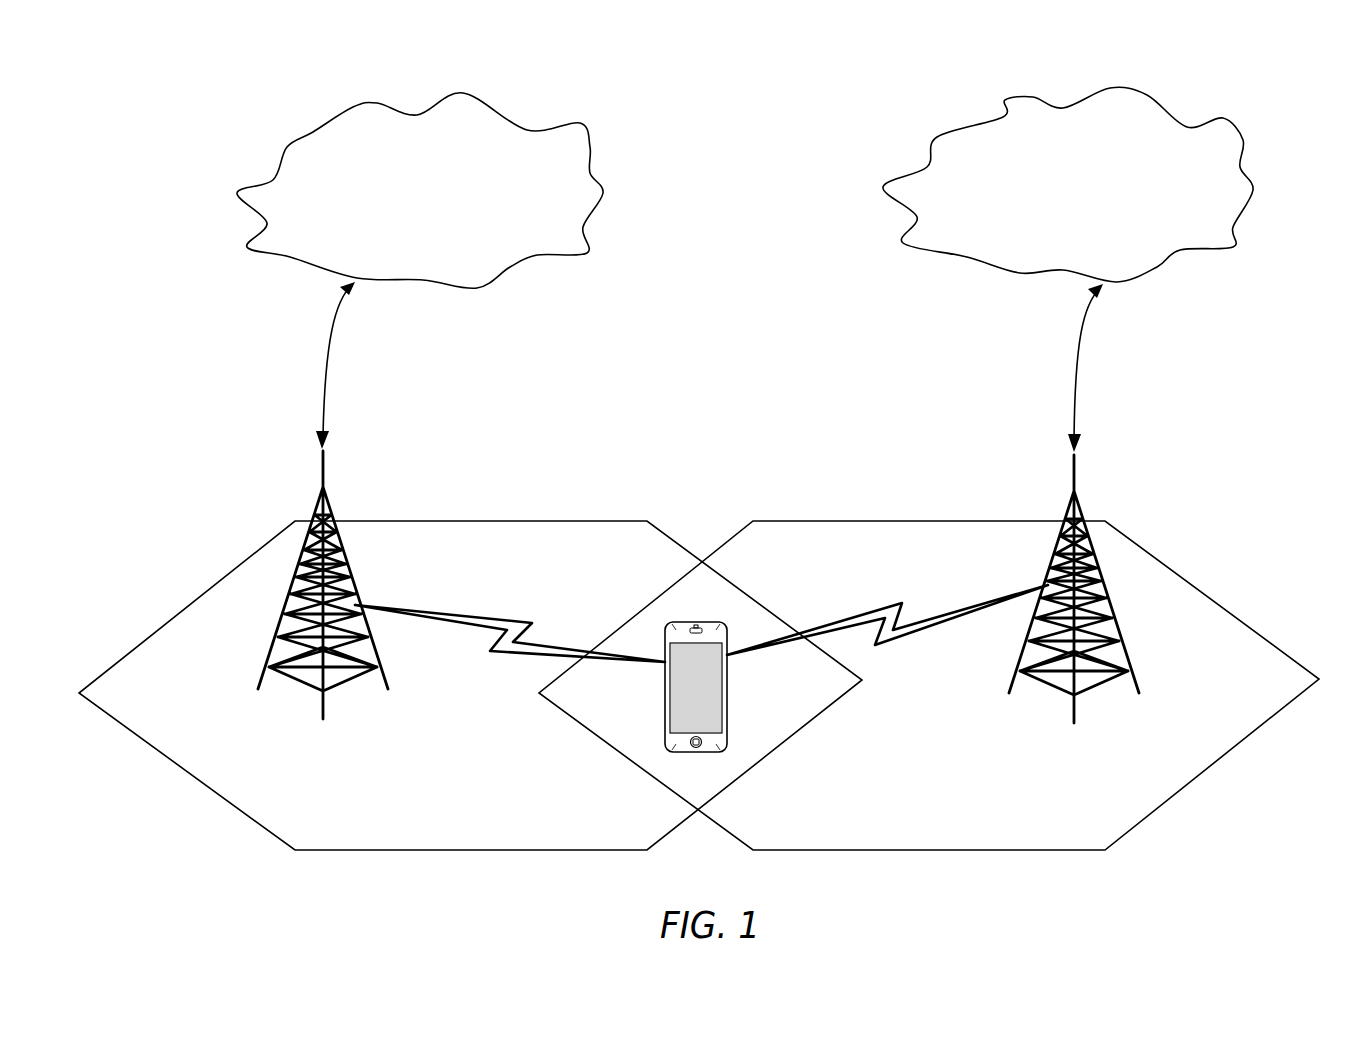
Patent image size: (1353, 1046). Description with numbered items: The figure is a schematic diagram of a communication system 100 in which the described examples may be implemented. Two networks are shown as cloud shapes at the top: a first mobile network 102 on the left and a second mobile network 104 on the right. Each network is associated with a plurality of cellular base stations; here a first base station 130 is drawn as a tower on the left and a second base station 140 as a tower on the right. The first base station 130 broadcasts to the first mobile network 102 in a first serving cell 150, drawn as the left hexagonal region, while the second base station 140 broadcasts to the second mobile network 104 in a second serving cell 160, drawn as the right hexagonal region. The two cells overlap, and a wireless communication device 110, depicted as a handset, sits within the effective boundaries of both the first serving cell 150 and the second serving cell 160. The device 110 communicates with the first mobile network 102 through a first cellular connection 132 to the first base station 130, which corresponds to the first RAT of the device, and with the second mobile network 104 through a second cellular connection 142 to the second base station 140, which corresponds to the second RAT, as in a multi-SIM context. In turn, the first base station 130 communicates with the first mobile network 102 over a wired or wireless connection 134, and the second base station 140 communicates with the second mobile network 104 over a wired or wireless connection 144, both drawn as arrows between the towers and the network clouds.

The communication system 100 is at (743, 180).
The first mobile network 102 is at (312, 131).
The second mobile network 104 is at (1043, 96).
The wireless communication device 110 is at (730, 675).
The first base station 130 is at (276, 640).
The first cellular connection 132 is at (526, 655).
The wired or wireless connection 134 is at (328, 350).
The second base station 140 is at (1117, 656).
The second cellular connection 142 is at (882, 605).
The wired or wireless connection 144 is at (1076, 352).
The first serving cell 150 is at (527, 520).
The second serving cell 160 is at (900, 520).